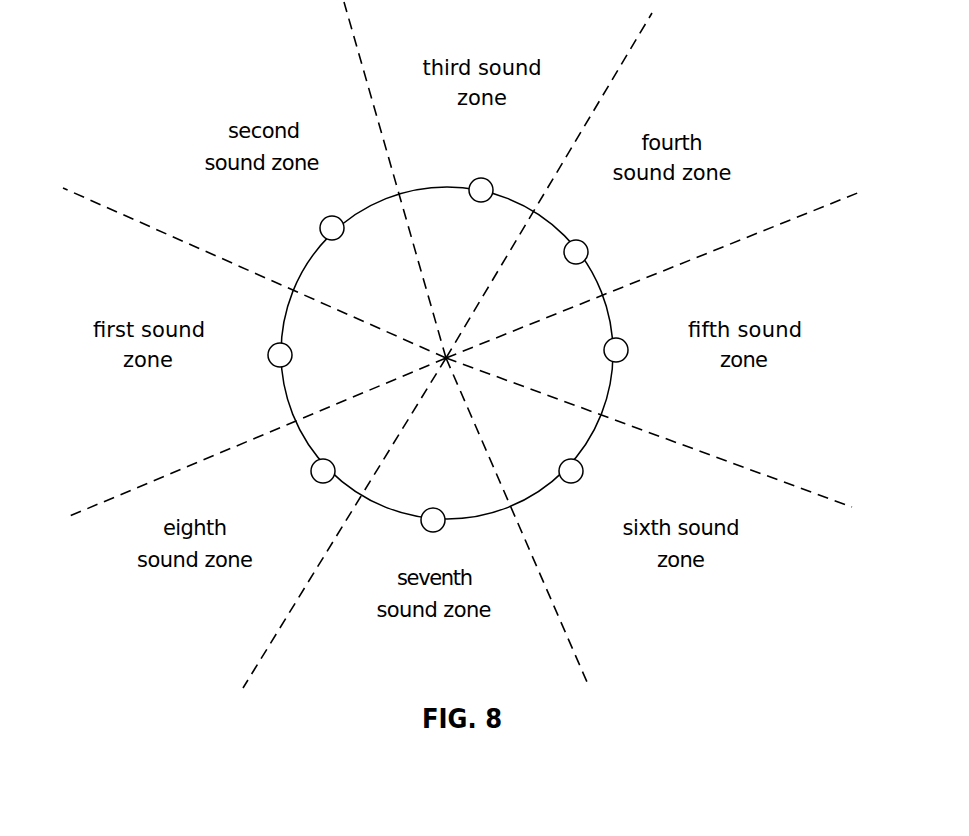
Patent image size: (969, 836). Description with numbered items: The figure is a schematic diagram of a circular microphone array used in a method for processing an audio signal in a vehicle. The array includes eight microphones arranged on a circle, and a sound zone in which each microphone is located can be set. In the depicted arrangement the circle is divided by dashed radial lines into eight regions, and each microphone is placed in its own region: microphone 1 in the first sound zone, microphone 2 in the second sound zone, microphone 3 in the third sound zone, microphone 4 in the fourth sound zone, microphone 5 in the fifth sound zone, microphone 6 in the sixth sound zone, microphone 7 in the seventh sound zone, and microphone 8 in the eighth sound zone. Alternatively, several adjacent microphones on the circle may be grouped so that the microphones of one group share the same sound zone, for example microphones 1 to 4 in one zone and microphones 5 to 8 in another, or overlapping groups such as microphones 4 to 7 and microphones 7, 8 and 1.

The microphone 1 is at (260, 356).
The microphone 2 is at (332, 215).
The microphone 3 is at (482, 175).
The microphone 4 is at (578, 233).
The microphone 5 is at (633, 350).
The microphone 6 is at (579, 483).
The microphone 7 is at (437, 534).
The microphone 8 is at (314, 486).